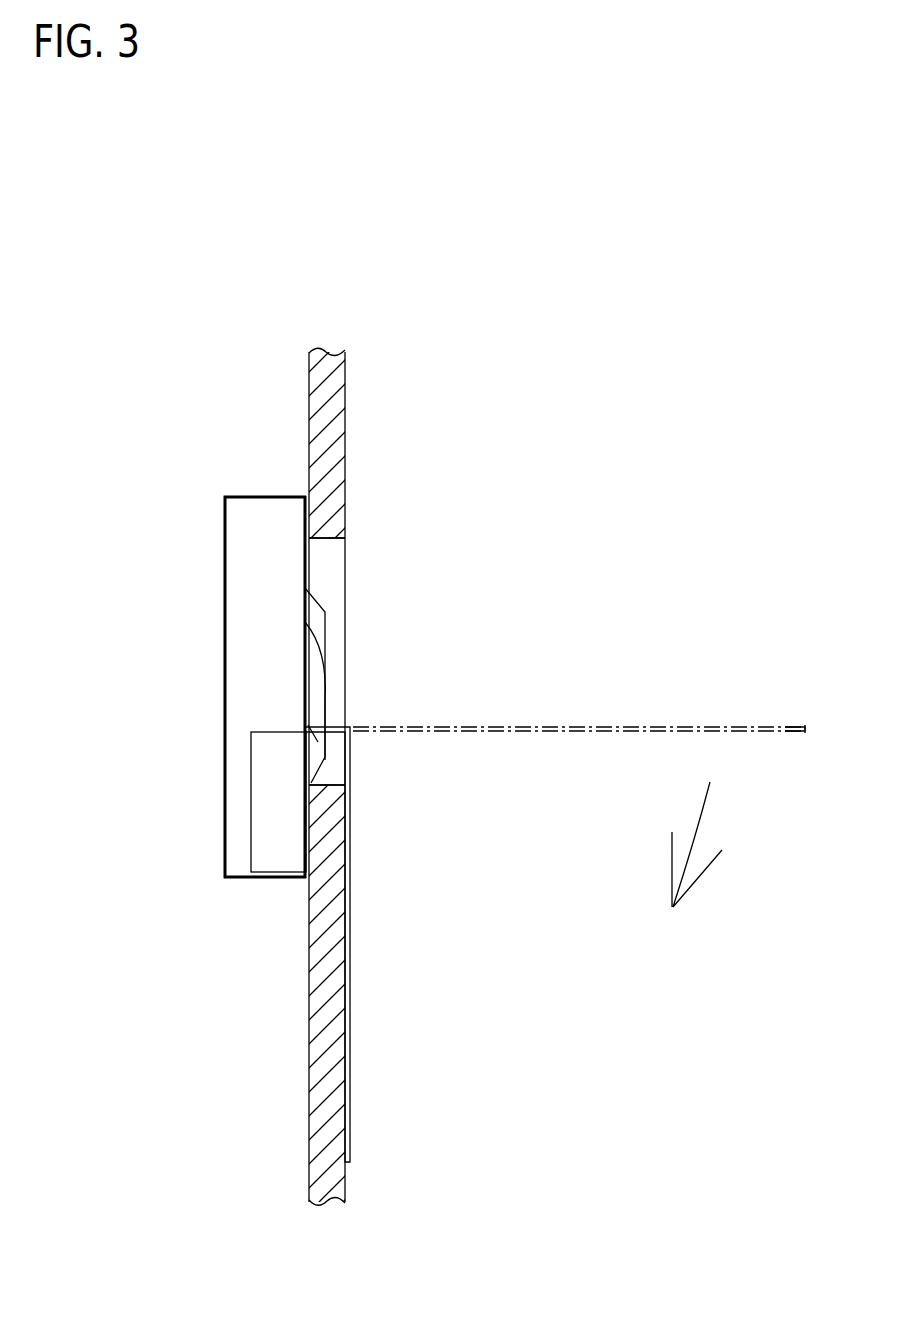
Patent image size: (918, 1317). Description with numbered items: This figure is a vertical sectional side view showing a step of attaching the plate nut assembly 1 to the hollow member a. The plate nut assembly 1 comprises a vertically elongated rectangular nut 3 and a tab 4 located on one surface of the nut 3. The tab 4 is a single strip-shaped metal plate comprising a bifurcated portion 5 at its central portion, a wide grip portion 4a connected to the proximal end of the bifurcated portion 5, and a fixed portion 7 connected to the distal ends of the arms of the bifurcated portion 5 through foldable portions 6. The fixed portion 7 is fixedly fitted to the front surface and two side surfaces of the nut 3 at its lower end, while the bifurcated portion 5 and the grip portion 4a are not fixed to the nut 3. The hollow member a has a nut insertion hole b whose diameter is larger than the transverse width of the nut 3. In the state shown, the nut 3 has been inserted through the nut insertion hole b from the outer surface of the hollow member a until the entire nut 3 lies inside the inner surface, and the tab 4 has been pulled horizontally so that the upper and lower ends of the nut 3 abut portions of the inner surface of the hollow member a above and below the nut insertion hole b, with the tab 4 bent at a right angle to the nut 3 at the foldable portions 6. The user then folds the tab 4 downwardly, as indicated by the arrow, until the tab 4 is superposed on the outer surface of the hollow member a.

The plate nut assembly 1 is at (253, 497).
The nut 3 is at (245, 575).
The foldable portions 6 is at (313, 723).
The fixed portion 7 is at (278, 797).
The hollow member a is at (328, 372).
The nut insertion hole b is at (326, 540).
The tab 4 is at (707, 724).
The grip portion 4a is at (782, 728).
The bifurcated portion 5 is at (409, 732).